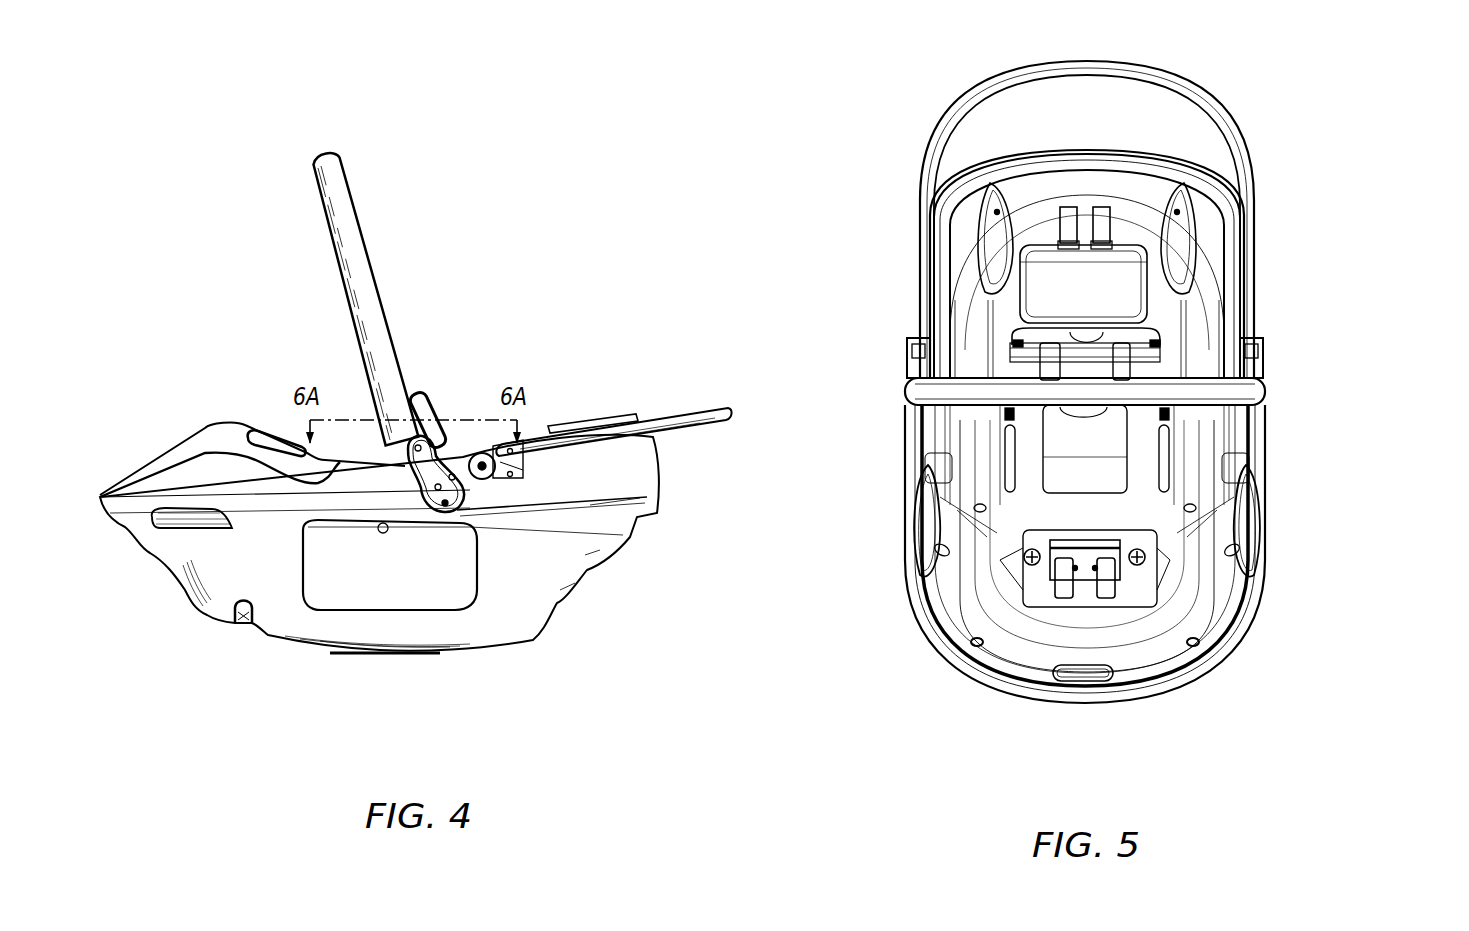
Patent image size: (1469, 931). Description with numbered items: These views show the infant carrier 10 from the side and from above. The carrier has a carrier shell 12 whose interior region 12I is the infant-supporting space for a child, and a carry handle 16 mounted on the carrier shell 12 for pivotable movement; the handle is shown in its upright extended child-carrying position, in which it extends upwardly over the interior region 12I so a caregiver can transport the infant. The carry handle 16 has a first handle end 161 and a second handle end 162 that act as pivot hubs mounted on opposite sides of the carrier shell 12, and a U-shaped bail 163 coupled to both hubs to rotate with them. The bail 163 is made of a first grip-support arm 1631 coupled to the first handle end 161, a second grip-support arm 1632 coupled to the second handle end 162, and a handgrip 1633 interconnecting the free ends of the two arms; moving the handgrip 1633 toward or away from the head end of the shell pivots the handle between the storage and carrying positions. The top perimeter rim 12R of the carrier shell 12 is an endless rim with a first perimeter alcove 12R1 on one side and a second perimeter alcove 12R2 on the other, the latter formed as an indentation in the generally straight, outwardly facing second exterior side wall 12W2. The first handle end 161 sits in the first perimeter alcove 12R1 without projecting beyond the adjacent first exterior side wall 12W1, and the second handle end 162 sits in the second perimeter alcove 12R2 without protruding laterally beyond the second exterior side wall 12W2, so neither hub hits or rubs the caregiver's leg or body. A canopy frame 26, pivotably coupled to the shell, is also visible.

In FIG. 4, the infant carrier 10 is at (484, 292).
In FIG. 5, the infant carrier 10 is at (1219, 72).
In FIG. 4, the carrier shell 12 is at (563, 606).
In FIG. 5, the carrier shell 12 is at (1126, 196).
In FIG. 5, the top perimeter rim 12R is at (1041, 147).
In FIG. 4, the first perimeter alcove 12R1 is at (472, 503).
In FIG. 5, the first perimeter alcove 12R1 is at (1260, 328).
In FIG. 5, the second perimeter alcove 12R2 is at (764, 190).
In FIG. 5, the first exterior side wall 12W1 is at (1268, 436).
In FIG. 5, the second exterior side wall 12W2 is at (902, 436).
In FIG. 5, the interior region 12I is at (1013, 620).
In FIG. 4, the carry handle 16 is at (342, 154).
In FIG. 4, the canopy frame 26 is at (683, 413).
In FIG. 5, the canopy frame 26 is at (950, 102).
In FIG. 4, the first handle end 161 is at (417, 511).
In FIG. 5, the first handle end 161 is at (1268, 352).
In FIG. 5, the second handle end 162 is at (905, 350).
In FIG. 4, the U-shaped bail 163 is at (312, 181).
In FIG. 4, the first grip-support arm 1631 is at (408, 430).
In FIG. 5, the first grip-support arm 1631 is at (1268, 392).
In FIG. 5, the second grip-support arm 1632 is at (905, 391).
In FIG. 4, the handgrip 1633 is at (322, 152).
In FIG. 5, the handgrip 1633 is at (1087, 393).